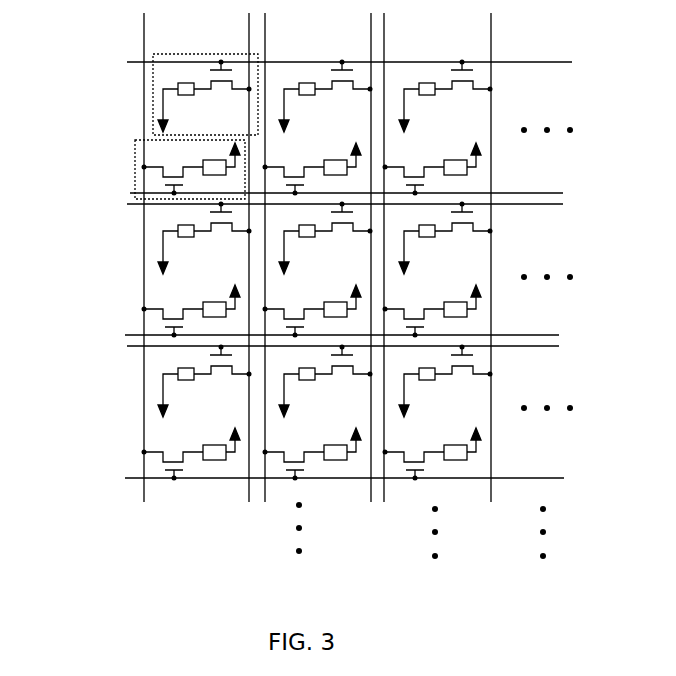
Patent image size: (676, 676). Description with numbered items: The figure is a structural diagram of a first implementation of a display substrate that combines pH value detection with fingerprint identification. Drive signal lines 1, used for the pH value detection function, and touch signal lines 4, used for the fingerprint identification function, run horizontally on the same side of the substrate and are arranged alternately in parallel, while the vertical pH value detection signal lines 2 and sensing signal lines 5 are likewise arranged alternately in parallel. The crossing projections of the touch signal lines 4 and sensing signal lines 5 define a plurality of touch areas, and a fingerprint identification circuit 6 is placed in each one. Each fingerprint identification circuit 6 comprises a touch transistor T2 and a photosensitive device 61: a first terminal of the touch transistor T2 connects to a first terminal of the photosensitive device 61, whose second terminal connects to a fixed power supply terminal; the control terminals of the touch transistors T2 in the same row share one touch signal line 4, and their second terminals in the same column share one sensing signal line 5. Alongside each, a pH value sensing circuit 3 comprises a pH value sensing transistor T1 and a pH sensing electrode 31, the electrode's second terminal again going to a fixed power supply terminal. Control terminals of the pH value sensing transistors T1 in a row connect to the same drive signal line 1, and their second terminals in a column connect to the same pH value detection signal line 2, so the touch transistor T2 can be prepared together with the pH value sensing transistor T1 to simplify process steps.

The drive signal line 1 is at (125, 478).
The pH value detection signal line 2 is at (410, 6).
The pH value sensing circuit 3 is at (135, 155).
The touch signal line 4 is at (127, 346).
The sensing signal line 5 is at (464, 8).
The fingerprint identification circuit 6 is at (152, 102).
The pH sensing electrode 31 is at (343, 320).
The photosensitive device 61 is at (299, 223).
The pH value sensing transistor T1 is at (312, 312).
The touch transistor T2 is at (325, 239).